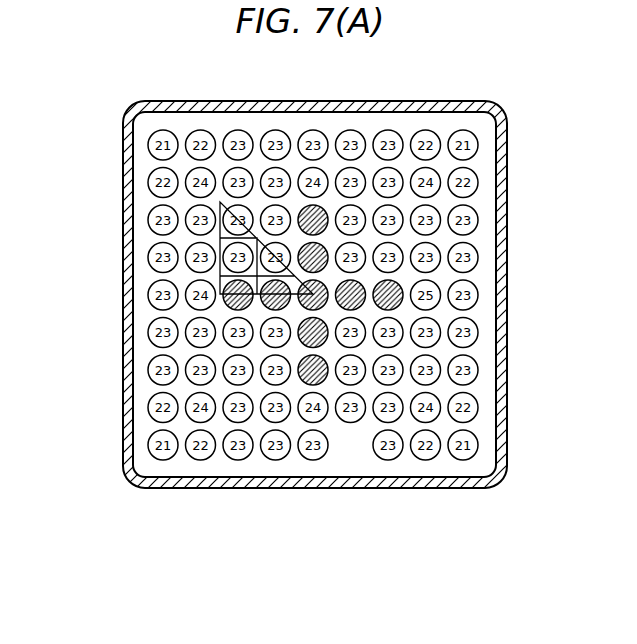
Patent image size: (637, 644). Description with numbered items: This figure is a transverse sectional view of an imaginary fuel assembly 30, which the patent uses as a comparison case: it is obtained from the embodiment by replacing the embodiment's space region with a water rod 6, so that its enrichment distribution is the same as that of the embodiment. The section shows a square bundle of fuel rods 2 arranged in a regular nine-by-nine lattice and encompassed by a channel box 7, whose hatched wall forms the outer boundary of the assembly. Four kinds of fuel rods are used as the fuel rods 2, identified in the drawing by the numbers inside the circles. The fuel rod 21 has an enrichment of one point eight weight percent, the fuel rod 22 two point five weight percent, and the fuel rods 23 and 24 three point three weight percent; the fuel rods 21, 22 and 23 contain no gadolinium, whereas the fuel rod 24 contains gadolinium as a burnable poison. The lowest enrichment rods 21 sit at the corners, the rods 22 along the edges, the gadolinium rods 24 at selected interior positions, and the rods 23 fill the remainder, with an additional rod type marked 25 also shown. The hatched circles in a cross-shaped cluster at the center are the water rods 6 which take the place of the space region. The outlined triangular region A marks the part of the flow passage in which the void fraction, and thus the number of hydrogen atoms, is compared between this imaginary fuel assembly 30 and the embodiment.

The fuel rods 2 is at (361, 134).
The water rod 6 is at (401, 290).
The channel box 7 is at (507, 240).
The fuel assembly 30 is at (111, 182).
The fuel rod 21 is at (313, 295).
The fuel rod 22 is at (313, 295).
The fuel rod 23 is at (313, 295).
The fuel rod 24 is at (313, 295).
The cell 25 is at (426, 295).
The region A is at (294, 294).